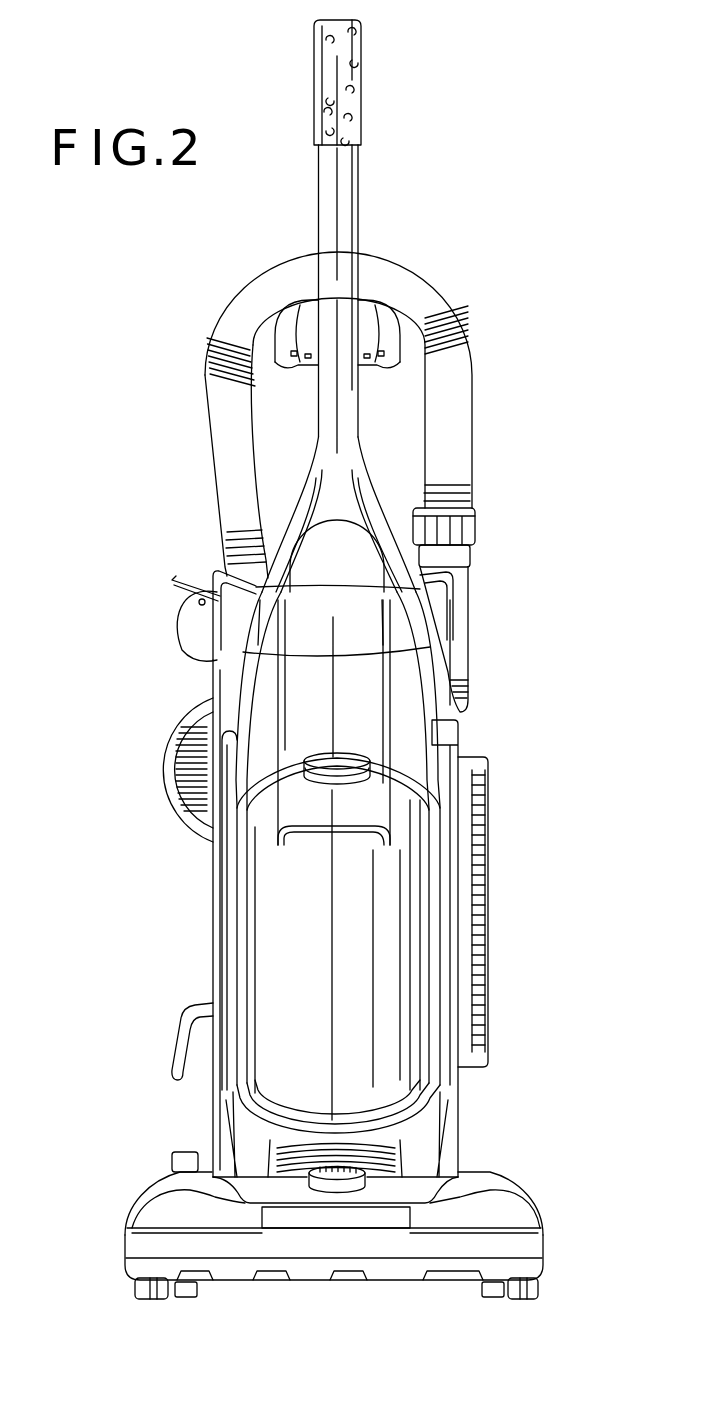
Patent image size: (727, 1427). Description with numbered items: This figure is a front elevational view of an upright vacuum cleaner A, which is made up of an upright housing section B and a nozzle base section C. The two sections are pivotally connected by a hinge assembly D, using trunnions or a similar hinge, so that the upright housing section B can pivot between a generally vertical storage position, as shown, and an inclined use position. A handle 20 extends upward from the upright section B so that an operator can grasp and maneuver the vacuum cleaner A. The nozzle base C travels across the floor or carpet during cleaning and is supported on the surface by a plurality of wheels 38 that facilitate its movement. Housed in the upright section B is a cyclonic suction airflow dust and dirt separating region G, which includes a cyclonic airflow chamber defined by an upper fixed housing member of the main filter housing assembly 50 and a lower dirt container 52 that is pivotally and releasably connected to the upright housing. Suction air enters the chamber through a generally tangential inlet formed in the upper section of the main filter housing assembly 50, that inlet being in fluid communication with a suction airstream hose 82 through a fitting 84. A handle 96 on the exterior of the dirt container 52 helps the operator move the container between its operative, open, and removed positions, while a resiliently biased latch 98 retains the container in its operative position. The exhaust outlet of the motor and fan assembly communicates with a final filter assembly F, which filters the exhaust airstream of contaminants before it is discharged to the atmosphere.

The handle 20 is at (343, 208).
The suction airstream hose 82 is at (452, 418).
The fitting 84 is at (455, 558).
The main filter housing assembly 50 is at (413, 742).
The latch 98 is at (333, 773).
The handle 96 is at (323, 828).
The dirt container 52 is at (380, 1003).
The final filter assembly F is at (490, 887).
The upright housing section B is at (208, 906).
The upright vacuum cleaner A is at (162, 1026).
The cyclonic suction airflow dust and dirt separating region G is at (305, 1024).
The hinge assembly D is at (455, 1166).
The nozzle base section C is at (535, 1200).
The wheels 38 is at (530, 1282).